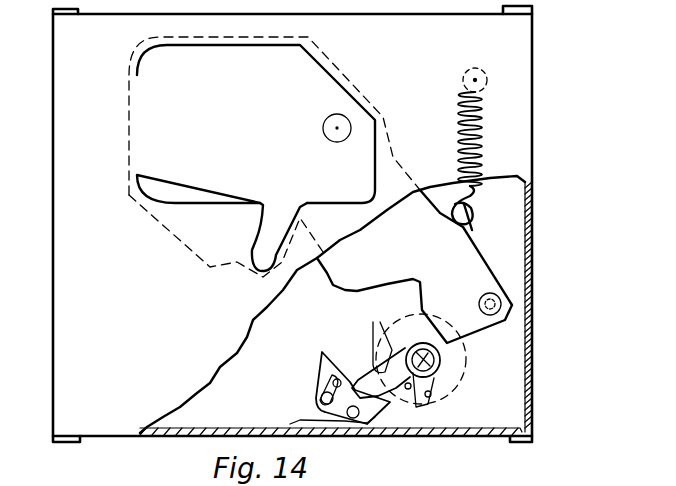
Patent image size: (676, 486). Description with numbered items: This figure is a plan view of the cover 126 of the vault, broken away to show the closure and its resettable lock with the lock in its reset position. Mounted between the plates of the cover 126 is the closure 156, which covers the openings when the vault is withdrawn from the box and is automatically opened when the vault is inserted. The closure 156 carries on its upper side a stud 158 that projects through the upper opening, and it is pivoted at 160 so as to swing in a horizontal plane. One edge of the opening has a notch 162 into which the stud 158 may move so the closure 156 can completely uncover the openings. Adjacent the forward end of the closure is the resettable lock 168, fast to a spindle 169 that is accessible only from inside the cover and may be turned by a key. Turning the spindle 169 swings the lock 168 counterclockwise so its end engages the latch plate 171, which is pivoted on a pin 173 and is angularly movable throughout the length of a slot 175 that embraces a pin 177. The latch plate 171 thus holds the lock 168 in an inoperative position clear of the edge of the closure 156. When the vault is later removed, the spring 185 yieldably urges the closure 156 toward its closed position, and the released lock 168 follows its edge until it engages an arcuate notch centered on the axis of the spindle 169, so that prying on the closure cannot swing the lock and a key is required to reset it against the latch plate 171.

The cover 126 is at (540, 160).
The closure 156 is at (228, 115).
The stud 158 is at (323, 126).
The pivot 160 is at (502, 305).
The notch 162 is at (255, 242).
The resettable lock 168 is at (371, 336).
The spindle 169 is at (440, 360).
The latch plate 171 is at (320, 375).
The pin 173 is at (360, 418).
The slot 175 is at (345, 368).
The pin 177 is at (321, 398).
The spring 185 is at (463, 101).